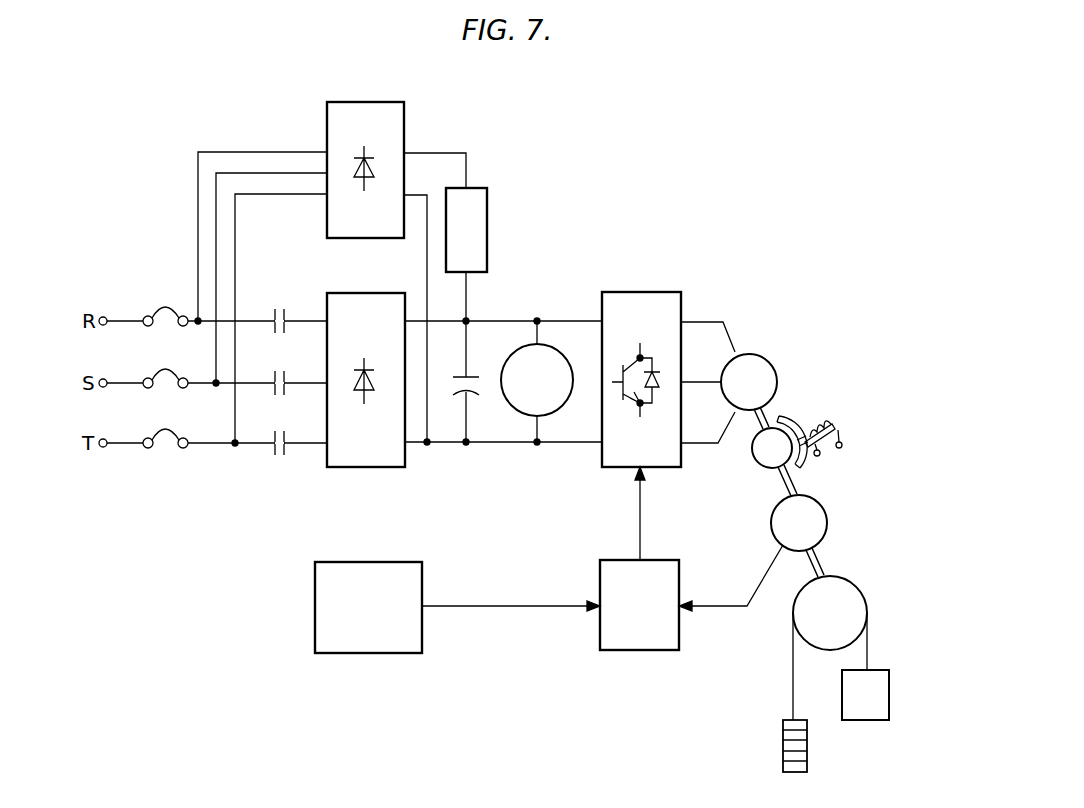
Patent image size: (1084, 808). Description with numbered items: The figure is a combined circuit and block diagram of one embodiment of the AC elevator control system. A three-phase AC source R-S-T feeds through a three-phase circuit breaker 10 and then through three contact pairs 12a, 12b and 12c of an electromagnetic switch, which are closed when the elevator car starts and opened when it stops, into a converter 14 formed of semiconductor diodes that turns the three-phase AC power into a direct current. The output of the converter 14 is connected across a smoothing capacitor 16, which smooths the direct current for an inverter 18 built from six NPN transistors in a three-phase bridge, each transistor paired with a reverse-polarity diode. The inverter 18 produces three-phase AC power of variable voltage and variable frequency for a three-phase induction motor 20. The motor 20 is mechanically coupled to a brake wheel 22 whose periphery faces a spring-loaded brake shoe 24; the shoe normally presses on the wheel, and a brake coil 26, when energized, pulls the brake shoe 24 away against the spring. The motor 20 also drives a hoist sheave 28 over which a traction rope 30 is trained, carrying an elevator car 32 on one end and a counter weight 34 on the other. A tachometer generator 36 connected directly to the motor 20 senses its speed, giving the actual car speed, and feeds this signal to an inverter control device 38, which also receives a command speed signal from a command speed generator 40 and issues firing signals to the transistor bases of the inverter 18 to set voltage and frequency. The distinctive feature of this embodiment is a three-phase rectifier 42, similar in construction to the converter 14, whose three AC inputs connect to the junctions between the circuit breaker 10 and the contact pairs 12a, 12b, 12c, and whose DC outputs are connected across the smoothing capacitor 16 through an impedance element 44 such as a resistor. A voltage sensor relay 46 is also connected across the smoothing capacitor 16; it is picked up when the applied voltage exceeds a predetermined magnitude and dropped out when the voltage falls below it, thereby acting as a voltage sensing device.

The three-phase circuit breaker 10 is at (160, 306).
The contact pair 12a is at (277, 307).
The contact pair 12b is at (288, 378).
The contact pair 12c is at (288, 440).
The converter 14 is at (370, 468).
The smoothing capacitor 16 is at (473, 388).
The inverter 18 is at (626, 291).
The three-phase induction motor 20 is at (776, 372).
The brake wheel 22 is at (753, 443).
The brake shoe 24 is at (791, 418).
The brake coil 26 is at (843, 437).
The hoist sheave 28 is at (867, 603).
The traction rope 30 is at (868, 644).
The elevator car 32 is at (889, 692).
The counter weight 34 is at (783, 751).
The tachometer generator 36 is at (827, 520).
The inverter control device 38 is at (643, 651).
The command speed generator 40 is at (366, 654).
The three-phase rectifier 42 is at (355, 101).
The impedance element 44 is at (488, 237).
The voltage sensor relay 46 is at (546, 345).